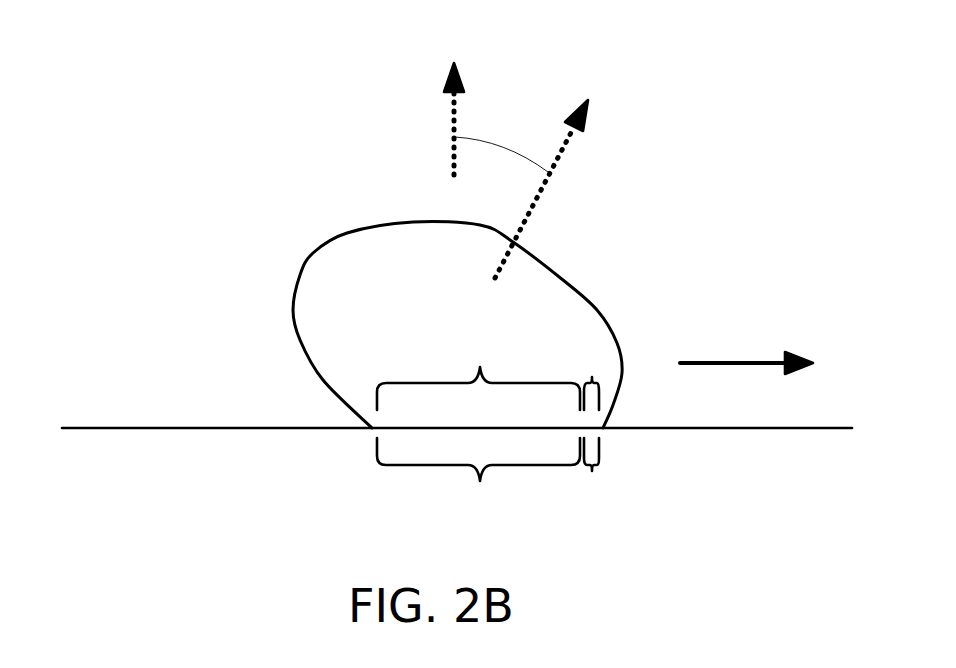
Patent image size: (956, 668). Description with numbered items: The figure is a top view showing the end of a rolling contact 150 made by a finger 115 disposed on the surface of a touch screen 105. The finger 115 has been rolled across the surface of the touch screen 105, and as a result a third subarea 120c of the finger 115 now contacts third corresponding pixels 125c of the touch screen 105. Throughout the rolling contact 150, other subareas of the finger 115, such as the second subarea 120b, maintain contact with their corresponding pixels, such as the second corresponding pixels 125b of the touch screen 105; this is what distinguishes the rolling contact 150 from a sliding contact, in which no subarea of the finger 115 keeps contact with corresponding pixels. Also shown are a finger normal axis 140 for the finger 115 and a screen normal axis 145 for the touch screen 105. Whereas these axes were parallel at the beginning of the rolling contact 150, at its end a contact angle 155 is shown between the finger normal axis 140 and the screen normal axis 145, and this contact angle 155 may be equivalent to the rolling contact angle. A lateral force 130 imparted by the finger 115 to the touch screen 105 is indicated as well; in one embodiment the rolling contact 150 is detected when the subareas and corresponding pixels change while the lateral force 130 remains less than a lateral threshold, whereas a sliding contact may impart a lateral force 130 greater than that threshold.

The touch screen 105 is at (147, 430).
The finger 115 is at (303, 288).
The second subarea 120b is at (478, 376).
The third subarea 120c is at (593, 380).
The second corresponding pixels 125b is at (478, 475).
The third corresponding pixels 125c is at (591, 469).
The lateral force 130 is at (757, 360).
The finger normal axis 140 is at (547, 173).
The screen normal axis 145 is at (453, 107).
The rolling contact 150 is at (94, 231).
The contact angle 155 is at (493, 140).